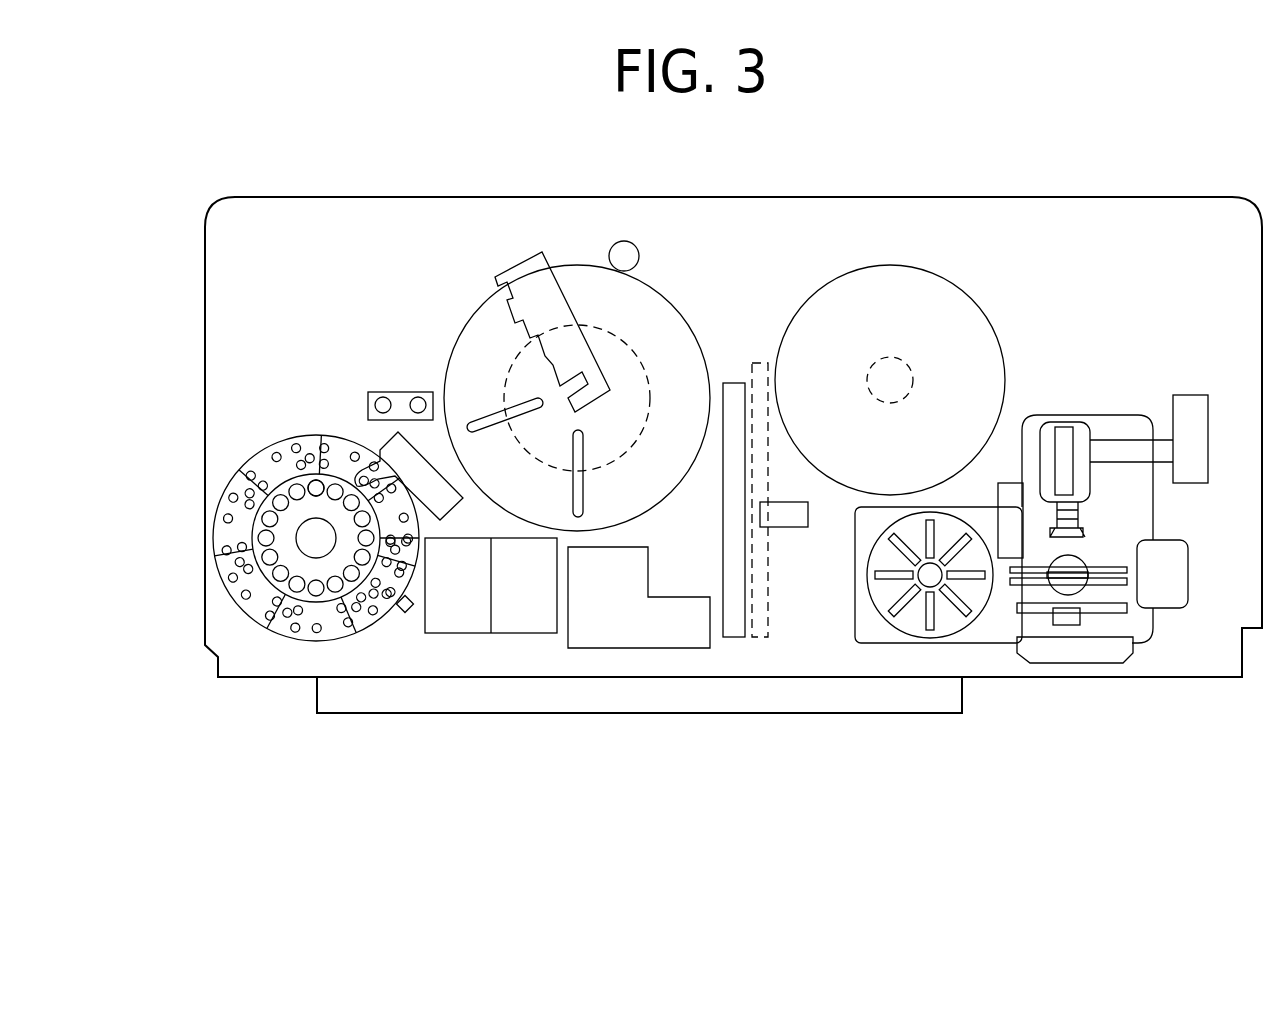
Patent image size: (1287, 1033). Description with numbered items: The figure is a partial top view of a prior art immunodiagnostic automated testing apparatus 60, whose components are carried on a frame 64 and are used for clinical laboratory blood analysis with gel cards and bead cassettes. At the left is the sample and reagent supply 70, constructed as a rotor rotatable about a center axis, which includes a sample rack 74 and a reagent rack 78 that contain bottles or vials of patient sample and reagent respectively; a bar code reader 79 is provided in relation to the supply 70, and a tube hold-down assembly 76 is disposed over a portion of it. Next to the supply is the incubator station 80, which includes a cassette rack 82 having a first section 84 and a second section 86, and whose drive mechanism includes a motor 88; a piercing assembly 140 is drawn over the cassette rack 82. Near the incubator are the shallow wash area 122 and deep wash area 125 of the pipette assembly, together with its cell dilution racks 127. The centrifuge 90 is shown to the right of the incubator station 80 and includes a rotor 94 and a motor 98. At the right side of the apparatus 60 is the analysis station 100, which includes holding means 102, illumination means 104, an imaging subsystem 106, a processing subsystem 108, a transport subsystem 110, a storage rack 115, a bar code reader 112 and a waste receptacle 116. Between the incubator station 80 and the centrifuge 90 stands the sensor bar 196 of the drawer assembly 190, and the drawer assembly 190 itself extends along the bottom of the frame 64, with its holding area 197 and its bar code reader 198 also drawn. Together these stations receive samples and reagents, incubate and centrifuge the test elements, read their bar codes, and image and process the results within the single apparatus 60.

The automated testing apparatus 60 is at (268, 185).
The frame 64 is at (205, 300).
The sample and reagent supply 70 is at (320, 507).
The sample rack 74 is at (322, 640).
The tube hold-down assembly 76 is at (450, 522).
The reagent rack 78 is at (310, 482).
The bar code reader 79 is at (405, 612).
The incubator station 80 is at (565, 371).
The cassette rack 82 is at (693, 310).
The first section 84 is at (498, 318).
The second section 86 is at (625, 410).
The motor 88 is at (628, 256).
The centrifuge 90 is at (929, 360).
The rotor 94 is at (870, 272).
The motor 98 is at (893, 375).
The analysis station 100 is at (1033, 513).
The holding means 102 is at (1070, 568).
The illumination means 104 is at (1118, 650).
The imaging subsystem 106 is at (1082, 487).
The processing subsystem 108 is at (1190, 395).
The transport subsystem 110 is at (1128, 620).
The bar code reader 112 is at (1005, 500).
The storage rack 115 is at (915, 612).
The waste receptacle 116 is at (1178, 562).
The shallow wash area 122 is at (380, 397).
The deep wash area 125 is at (418, 397).
The cell dilution racks 127 is at (532, 620).
The piercing assembly 140 is at (522, 268).
The drawer assembly 190 is at (393, 716).
The sensor bar 196 is at (769, 596).
The holding area 197 is at (668, 640).
The bar code reader 198 is at (790, 502).